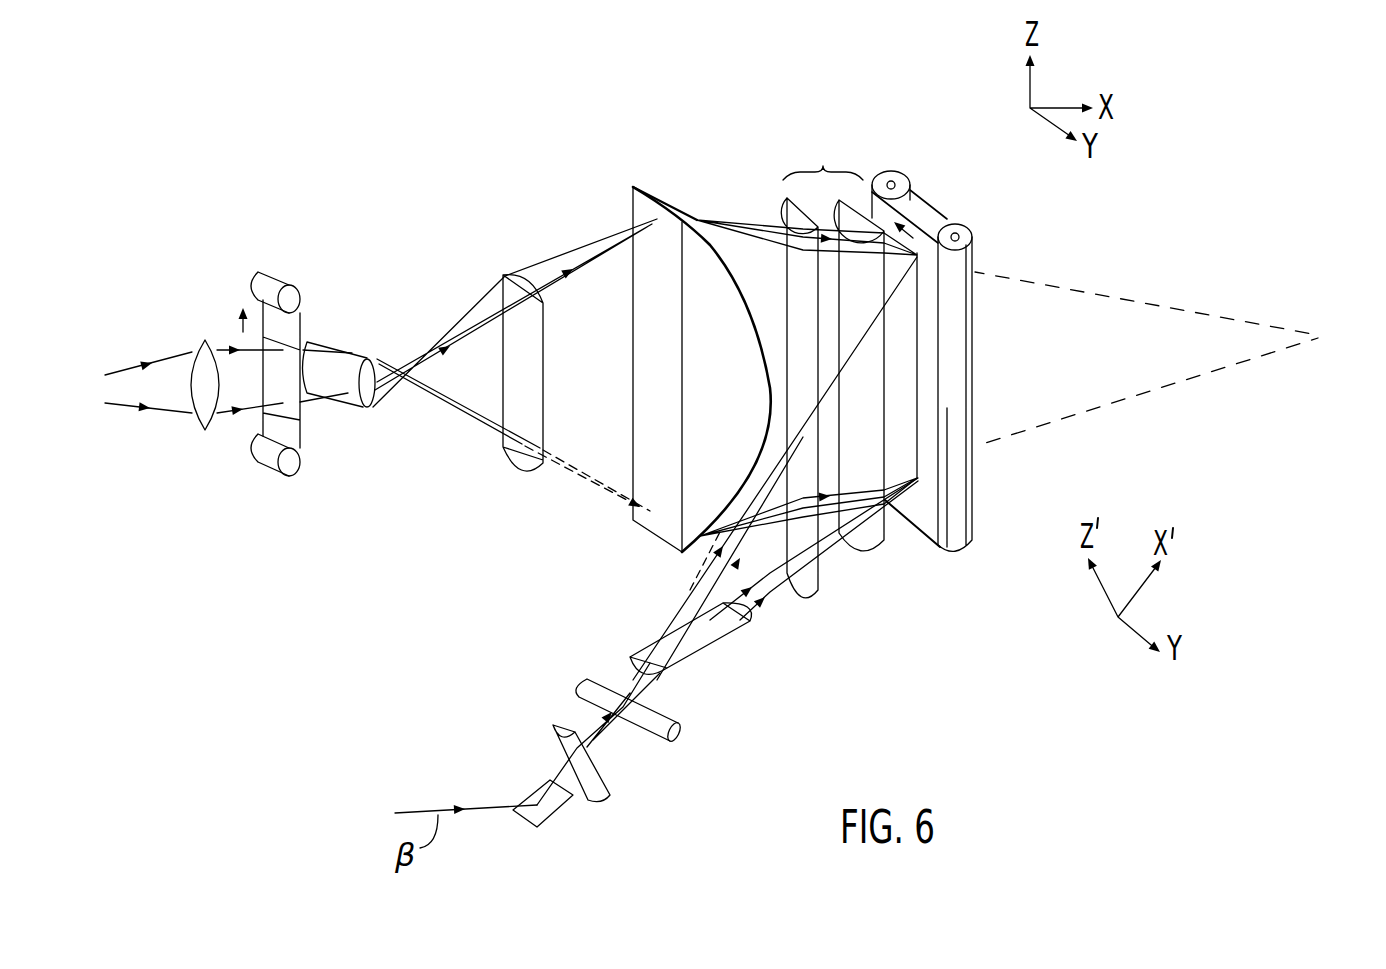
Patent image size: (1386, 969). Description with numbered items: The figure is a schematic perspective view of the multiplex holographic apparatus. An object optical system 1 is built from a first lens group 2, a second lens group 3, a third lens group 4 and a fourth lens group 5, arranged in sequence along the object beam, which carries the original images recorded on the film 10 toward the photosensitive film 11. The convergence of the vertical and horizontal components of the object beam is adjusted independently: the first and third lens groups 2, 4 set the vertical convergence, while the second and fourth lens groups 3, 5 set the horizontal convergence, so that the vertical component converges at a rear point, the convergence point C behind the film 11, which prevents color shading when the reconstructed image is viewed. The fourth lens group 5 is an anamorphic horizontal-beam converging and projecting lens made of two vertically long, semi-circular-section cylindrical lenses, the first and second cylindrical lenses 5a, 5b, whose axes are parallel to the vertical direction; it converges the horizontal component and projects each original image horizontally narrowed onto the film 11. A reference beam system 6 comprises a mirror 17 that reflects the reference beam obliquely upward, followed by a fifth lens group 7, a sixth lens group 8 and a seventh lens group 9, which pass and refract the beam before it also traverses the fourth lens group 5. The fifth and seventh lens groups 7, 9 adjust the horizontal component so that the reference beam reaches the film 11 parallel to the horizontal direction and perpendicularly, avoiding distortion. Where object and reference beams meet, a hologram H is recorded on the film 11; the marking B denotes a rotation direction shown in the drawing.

The object optical system 1 is at (543, 233).
The first lens group 2 is at (360, 402).
The second lens group 3 is at (535, 367).
The third lens group 4 is at (645, 302).
The fourth lens group 5 is at (823, 157).
The first cylindrical lens 5a is at (816, 592).
The second cylindrical lens 5b is at (874, 550).
The reference beam system 6 is at (783, 640).
The fifth lens group 7 is at (555, 750).
The sixth lens group 8 is at (685, 734).
The seventh lens group 9 is at (652, 652).
The film 10 is at (300, 318).
The film 11 is at (925, 222).
The mirror 17 is at (562, 815).
The hologram H is at (920, 378).
The rotation direction B is at (633, 715).
The convergence point C is at (1162, 359).